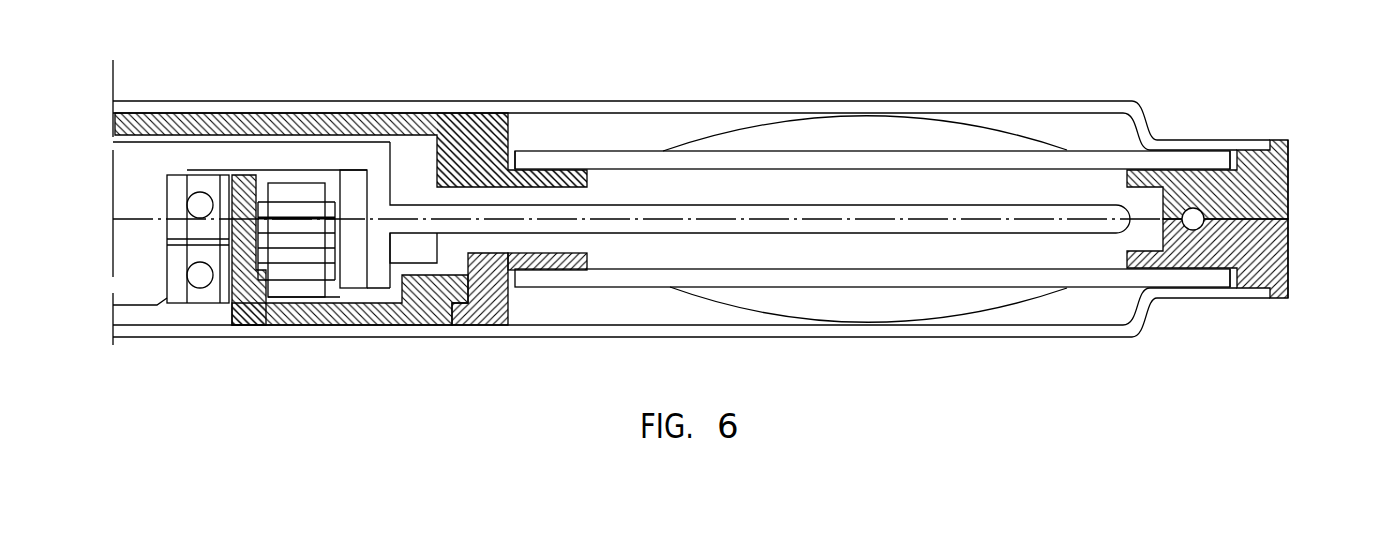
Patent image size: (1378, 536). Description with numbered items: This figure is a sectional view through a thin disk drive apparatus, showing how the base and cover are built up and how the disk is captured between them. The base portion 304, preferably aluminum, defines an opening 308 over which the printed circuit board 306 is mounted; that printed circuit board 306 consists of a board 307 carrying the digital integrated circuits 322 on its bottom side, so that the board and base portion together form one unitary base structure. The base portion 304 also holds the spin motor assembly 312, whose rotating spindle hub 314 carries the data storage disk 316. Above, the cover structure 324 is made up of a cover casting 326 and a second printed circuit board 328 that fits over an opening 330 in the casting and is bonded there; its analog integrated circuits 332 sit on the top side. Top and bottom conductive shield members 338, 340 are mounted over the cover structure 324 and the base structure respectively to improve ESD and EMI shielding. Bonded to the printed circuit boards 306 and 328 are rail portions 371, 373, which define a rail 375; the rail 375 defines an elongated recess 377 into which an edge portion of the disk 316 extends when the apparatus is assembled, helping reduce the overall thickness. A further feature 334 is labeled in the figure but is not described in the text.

The base portion 304 is at (488, 307).
The printed circuit board 306 is at (1073, 301).
The board 307 is at (662, 280).
The opening 308 is at (587, 259).
The spin motor assembly 312 is at (206, 136).
The rotating spindle hub 314 is at (138, 278).
The data storage disk 316 is at (1107, 210).
The integrated circuits 322 is at (820, 308).
The cover structure 324 is at (623, 155).
The cover casting 326 is at (468, 122).
The printed circuit board 328 is at (1084, 146).
The opening 330 is at (587, 177).
The integrated circuits 332 is at (865, 123).
The upper tube inner end 334 is at (554, 146).
The top conductive shield member 338 is at (902, 338).
The bottom conductive shield member 340 is at (723, 102).
The rail portion 371 is at (1273, 250).
The rail portion 373 is at (1273, 182).
The rail 375 is at (1289, 301).
The elongated recess 377 is at (1163, 240).